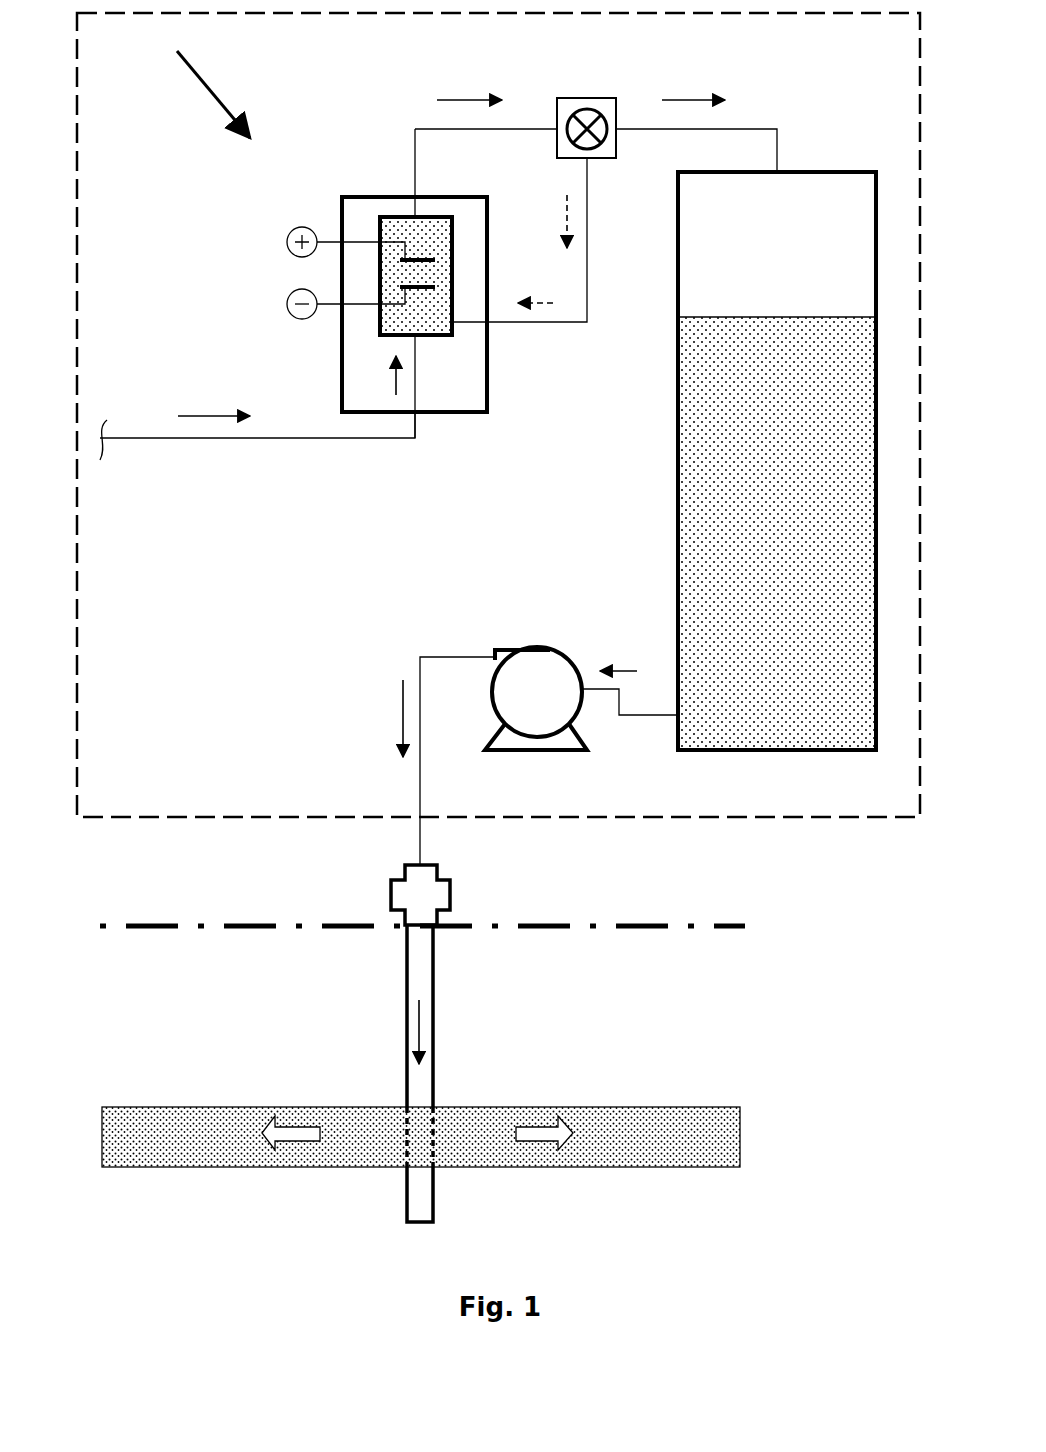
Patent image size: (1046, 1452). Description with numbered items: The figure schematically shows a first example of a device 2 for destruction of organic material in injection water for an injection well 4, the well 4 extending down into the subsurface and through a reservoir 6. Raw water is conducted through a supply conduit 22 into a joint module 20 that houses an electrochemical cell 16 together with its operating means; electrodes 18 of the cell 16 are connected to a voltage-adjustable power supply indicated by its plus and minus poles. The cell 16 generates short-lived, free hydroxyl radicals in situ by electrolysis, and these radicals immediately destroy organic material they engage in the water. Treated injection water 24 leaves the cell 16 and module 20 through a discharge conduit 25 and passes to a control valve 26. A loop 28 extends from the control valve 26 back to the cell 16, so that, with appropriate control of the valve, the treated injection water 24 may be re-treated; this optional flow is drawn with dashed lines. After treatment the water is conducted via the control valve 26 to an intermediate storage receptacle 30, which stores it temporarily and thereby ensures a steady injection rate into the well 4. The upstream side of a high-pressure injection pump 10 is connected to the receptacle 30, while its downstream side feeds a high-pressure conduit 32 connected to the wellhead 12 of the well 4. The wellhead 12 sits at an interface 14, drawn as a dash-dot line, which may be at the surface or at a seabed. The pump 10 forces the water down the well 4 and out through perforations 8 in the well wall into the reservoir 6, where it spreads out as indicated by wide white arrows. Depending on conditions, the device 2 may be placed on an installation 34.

The device 2 is at (204, 82).
The injection well 4 is at (437, 990).
The reservoir 6 is at (660, 1118).
The perforations 8 is at (407, 1145).
The high-pressure injection pump 10 is at (538, 675).
The wellhead 12 is at (437, 897).
The interface 14 is at (125, 920).
The electrochemical cell 16 is at (398, 215).
The electrodes 18 is at (438, 273).
The joint module 20 is at (342, 205).
The supply conduit 22 is at (147, 437).
The treated injection water 24 is at (437, 1040).
The discharge conduit 25 is at (420, 124).
The control valve 26 is at (570, 108).
The loop 28 is at (527, 323).
The intermediate storage receptacle 30 is at (843, 170).
The high-pressure conduit 32 is at (447, 655).
The installation 34 is at (790, 817).